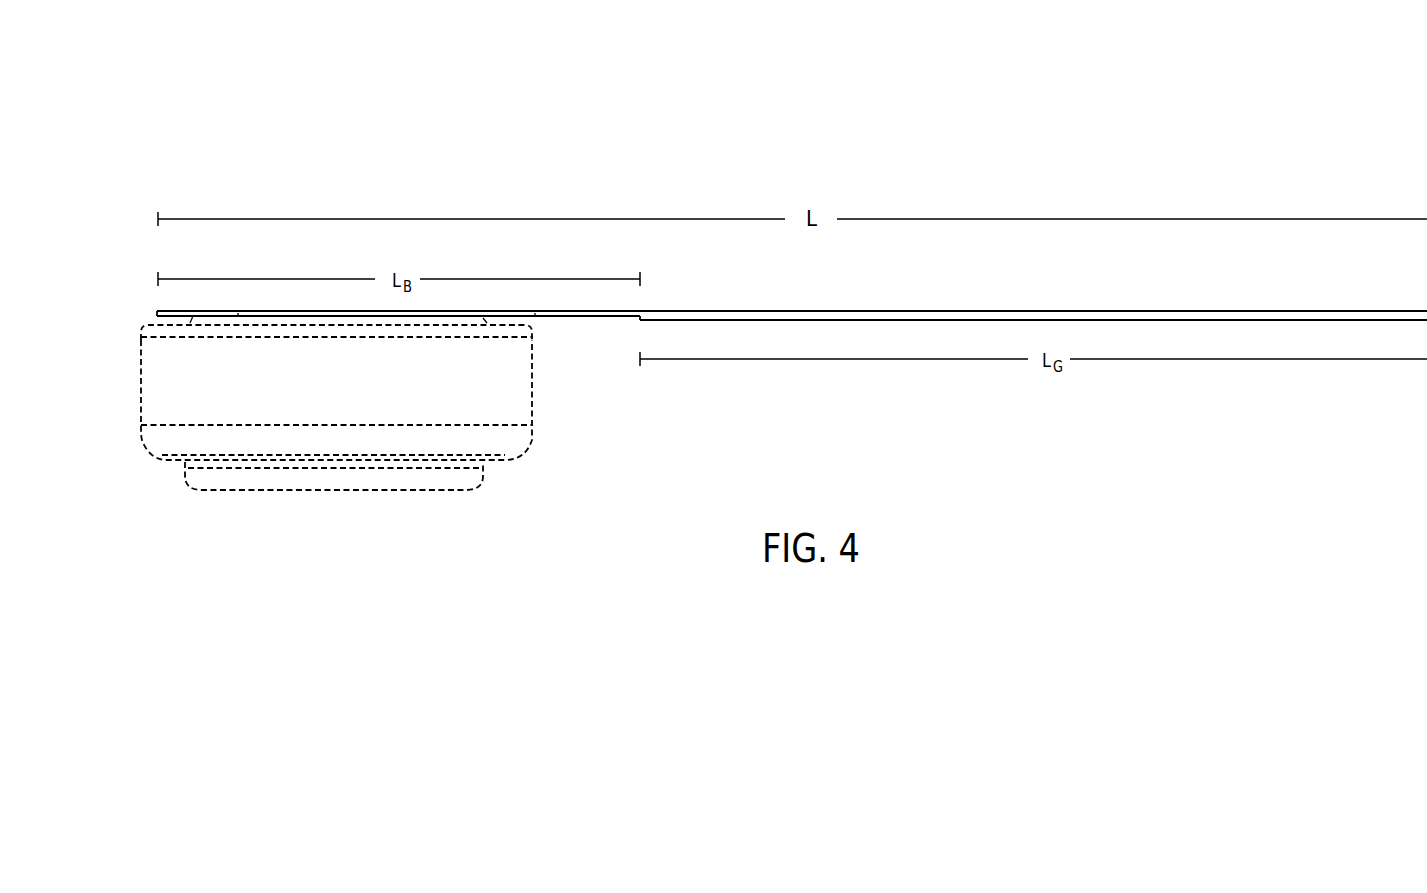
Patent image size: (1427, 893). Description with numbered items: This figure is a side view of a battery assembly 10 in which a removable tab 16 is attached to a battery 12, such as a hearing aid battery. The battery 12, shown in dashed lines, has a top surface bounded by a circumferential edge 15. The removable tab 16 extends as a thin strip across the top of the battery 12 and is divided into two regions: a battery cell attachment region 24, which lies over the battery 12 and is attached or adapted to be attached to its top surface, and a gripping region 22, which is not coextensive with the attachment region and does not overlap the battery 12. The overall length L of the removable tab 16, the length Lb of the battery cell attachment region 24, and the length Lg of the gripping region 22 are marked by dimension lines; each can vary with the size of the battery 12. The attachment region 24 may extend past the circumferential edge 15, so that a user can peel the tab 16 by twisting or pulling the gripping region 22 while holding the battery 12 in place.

The battery assembly 10 is at (1318, 130).
The battery 12 is at (141, 377).
The circumferential edge 15 is at (141, 330).
The removable tab 16 is at (652, 300).
The gripping region 22 is at (1111, 311).
The battery cell attachment region 24 is at (503, 311).